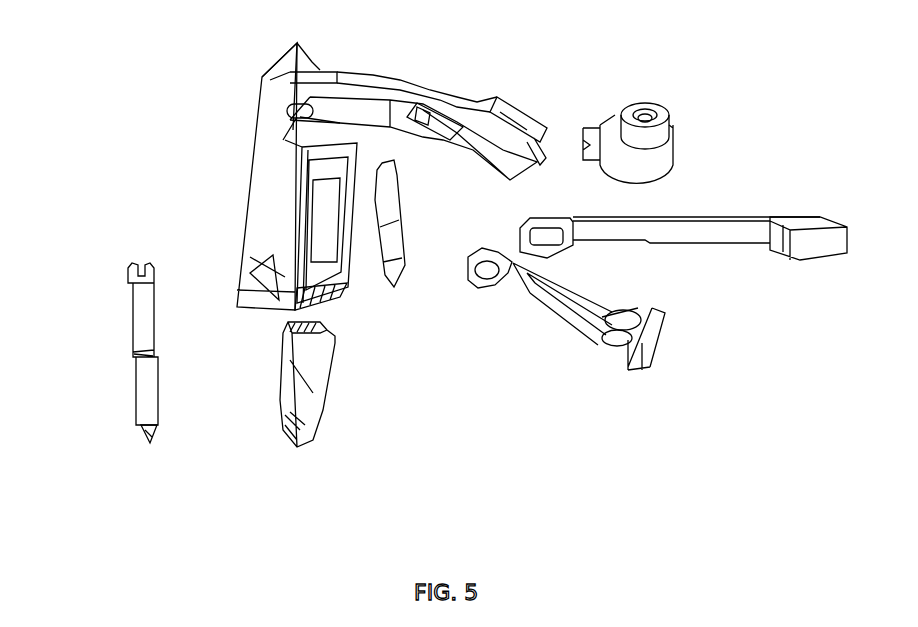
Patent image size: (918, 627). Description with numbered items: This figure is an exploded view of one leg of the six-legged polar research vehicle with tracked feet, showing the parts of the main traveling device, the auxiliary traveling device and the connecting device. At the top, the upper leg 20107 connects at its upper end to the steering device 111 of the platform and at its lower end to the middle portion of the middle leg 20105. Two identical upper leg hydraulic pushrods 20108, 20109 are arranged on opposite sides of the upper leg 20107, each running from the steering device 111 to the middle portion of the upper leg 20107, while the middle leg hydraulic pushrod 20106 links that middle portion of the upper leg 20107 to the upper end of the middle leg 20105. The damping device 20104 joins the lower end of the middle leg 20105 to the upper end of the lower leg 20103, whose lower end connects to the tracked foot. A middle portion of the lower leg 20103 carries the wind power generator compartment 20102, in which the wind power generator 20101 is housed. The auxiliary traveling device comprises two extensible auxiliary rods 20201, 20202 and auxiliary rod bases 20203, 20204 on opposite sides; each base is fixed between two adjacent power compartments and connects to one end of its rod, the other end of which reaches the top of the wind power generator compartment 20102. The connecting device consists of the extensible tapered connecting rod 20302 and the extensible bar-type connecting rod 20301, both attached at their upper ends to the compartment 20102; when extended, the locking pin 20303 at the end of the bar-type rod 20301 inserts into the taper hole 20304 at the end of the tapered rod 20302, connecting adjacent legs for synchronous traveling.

The damping device 20104 is at (265, 135).
The middle leg 20105 is at (280, 87).
The extensible tapered connecting rod 20302 is at (305, 55).
The middle leg hydraulic pushrod 20106 is at (340, 73).
The upper leg 20107 is at (418, 88).
The upper leg hydraulic pushrod 20108 is at (477, 100).
The upper leg hydraulic pushrod 20109 is at (515, 109).
The steering device 111 is at (630, 157).
The extensible auxiliary rod 20201 is at (583, 292).
The extensible auxiliary rod 20202 is at (718, 233).
The lower leg 20103 is at (270, 183).
The wind power generator compartment 20102 is at (290, 274).
The wind power generator 20101 is at (307, 380).
The extensible bar-type connecting rod 20301 is at (140, 387).
The locking pin 20303 is at (150, 443).
The taper hole 20304 is at (395, 290).
The auxiliary rod base 20204 is at (635, 373).
The auxiliary rod base 20203 is at (807, 250).